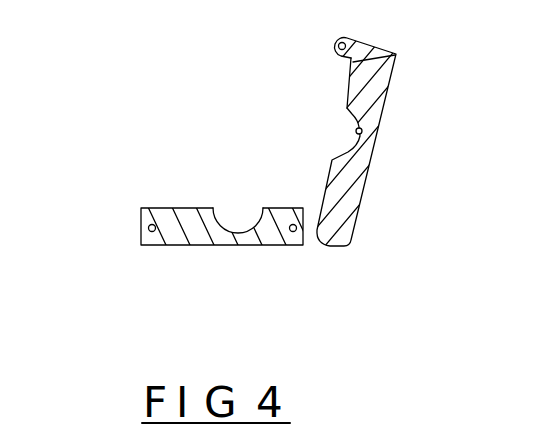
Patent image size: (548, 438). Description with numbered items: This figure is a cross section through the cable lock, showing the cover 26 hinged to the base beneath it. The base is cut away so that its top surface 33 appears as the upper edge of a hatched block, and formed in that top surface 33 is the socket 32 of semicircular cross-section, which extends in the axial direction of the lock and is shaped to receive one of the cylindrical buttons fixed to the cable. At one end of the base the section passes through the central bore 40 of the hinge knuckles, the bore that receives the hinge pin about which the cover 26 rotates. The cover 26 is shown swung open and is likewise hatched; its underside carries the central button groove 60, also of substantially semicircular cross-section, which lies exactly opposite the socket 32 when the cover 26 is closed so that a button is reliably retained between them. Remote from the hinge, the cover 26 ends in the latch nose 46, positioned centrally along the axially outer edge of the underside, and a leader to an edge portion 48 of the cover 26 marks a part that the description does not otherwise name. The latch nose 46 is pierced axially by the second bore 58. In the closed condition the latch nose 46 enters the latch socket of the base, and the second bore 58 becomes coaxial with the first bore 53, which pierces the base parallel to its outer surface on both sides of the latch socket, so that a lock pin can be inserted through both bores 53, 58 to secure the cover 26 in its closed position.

The cover 26 is at (350, 145).
The second bore 58 is at (293, 44).
The latch nose 46 is at (317, 67).
The lever edge 48 is at (295, 83).
The central button groove 60 is at (404, 143).
The top surface 33 is at (194, 232).
The socket 32 is at (235, 194).
The first bore 53 is at (110, 242).
The central bore 40 is at (306, 267).